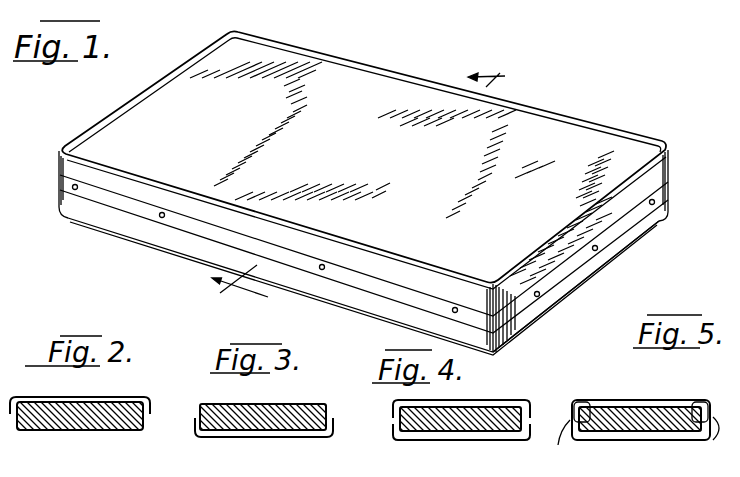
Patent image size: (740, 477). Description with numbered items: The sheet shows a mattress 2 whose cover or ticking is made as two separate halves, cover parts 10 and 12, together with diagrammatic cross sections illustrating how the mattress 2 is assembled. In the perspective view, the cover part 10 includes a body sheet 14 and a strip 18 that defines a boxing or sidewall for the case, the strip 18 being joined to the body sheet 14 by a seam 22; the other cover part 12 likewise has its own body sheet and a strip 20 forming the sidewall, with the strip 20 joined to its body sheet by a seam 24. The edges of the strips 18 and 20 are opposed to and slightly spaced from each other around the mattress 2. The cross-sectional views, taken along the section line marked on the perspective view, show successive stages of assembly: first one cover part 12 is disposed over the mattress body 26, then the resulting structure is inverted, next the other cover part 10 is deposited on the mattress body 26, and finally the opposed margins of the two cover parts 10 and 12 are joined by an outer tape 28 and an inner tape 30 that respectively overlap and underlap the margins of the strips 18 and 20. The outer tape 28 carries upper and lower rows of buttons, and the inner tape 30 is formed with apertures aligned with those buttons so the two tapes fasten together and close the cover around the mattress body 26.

In FIG. 1, the cover part 10 is at (373, 60).
In FIG. 4, the cover part 10 is at (491, 395).
In FIG. 5, the cover part 10 is at (592, 395).
In FIG. 1, the cover part 12 is at (198, 262).
In FIG. 2, the cover part 12 is at (100, 395).
In FIG. 3, the cover part 12 is at (226, 442).
In FIG. 4, the cover part 12 is at (509, 442).
In FIG. 5, the cover part 12 is at (652, 443).
In FIG. 1, the body sheet 14 is at (337, 142).
In FIG. 1, the strip 18 is at (153, 193).
In FIG. 1, the strip 20 is at (118, 220).
In FIG. 1, the seam 22 is at (613, 128).
In FIG. 1, the seam 24 is at (630, 252).
In FIG. 2, the mattress body 26 is at (86, 417).
In FIG. 3, the mattress body 26 is at (285, 425).
In FIG. 4, the mattress body 26 is at (445, 425).
In FIG. 5, the mattress body 26 is at (636, 408).
In FIG. 1, the outer tape 28 is at (322, 270).
In FIG. 5, the outer tape 28 is at (558, 446).
In FIG. 5, the inner tape 30 is at (580, 405).
In FIG. 1, the mattress 2 is at (584, 70).